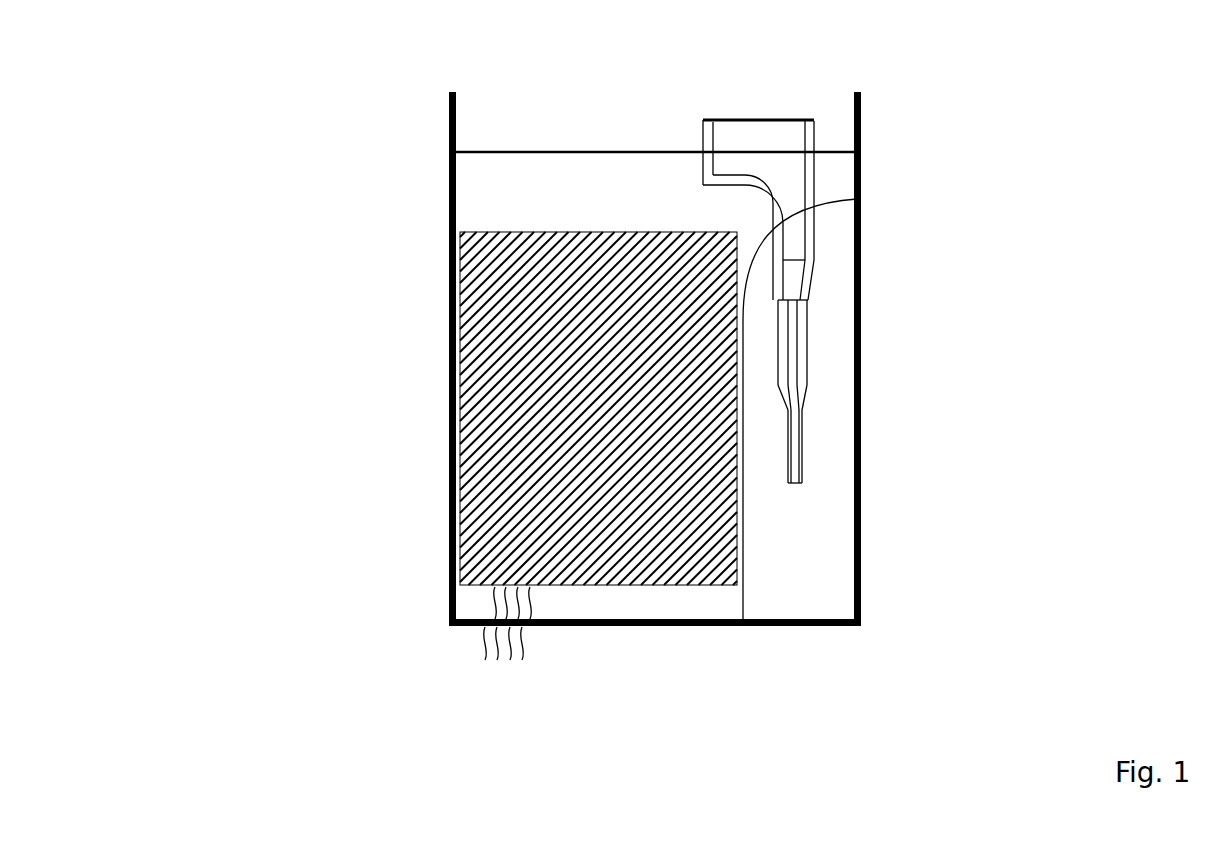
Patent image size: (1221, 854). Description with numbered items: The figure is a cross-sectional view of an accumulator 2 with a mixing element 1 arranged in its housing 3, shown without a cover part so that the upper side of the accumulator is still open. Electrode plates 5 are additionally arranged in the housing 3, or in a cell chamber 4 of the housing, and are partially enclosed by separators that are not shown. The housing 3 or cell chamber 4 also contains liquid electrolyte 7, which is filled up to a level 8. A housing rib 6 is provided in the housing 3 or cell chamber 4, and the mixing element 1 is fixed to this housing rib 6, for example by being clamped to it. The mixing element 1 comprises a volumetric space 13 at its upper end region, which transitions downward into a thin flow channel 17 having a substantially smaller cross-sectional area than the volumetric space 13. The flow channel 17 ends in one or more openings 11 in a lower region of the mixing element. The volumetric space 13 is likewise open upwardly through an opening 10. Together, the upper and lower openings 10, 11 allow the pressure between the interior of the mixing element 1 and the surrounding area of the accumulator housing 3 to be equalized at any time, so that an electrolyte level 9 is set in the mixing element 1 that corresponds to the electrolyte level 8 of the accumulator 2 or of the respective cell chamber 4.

The mixing element 1 is at (828, 179).
The accumulator 2 is at (393, 135).
The housing 3 is at (858, 468).
The cell chamber 4 is at (521, 128).
The electrode plates 5 is at (508, 640).
The housing rib 6 is at (838, 363).
The liquid electrolyte 7 is at (483, 198).
The electrolyte level 8 is at (595, 152).
The electrolyte level in the mixing element 9 is at (795, 152).
The upper opening 10 is at (740, 118).
The lower opening 11 is at (790, 486).
The volumetric space 13 is at (728, 138).
The flow channel 17 is at (810, 228).